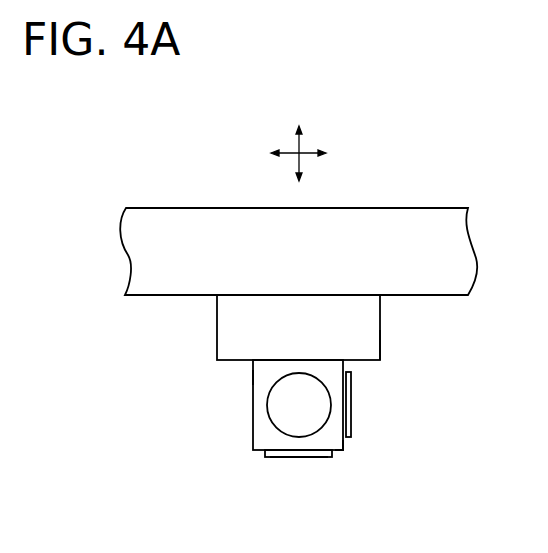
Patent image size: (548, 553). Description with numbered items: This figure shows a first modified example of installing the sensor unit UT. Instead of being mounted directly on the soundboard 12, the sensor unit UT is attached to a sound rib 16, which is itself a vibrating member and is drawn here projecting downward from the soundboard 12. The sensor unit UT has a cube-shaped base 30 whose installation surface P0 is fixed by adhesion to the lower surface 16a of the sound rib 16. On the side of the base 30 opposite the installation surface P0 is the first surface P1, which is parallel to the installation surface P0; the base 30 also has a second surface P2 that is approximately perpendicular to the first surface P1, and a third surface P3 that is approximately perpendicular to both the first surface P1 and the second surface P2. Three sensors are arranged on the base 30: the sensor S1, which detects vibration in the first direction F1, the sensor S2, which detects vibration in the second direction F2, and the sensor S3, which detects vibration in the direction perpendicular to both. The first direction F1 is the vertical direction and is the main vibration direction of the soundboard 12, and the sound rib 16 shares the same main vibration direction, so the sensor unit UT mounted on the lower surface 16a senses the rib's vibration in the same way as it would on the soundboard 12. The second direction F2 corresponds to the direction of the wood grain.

The soundboard 12 is at (424, 220).
The sound rib 16 is at (372, 332).
The lower surface of sound rib 16a is at (362, 361).
The base 30 is at (253, 450).
The sensor S3 is at (272, 415).
The third surface P3 is at (262, 377).
The installation surface P0 is at (268, 360).
The sensor S2 is at (352, 403).
The second surface P2 is at (343, 447).
The first surface P1 is at (260, 452).
The sensor S1 is at (298, 458).
The sensor unit UT is at (343, 450).
The first direction F1 is at (298, 138).
The second direction F2 is at (319, 155).